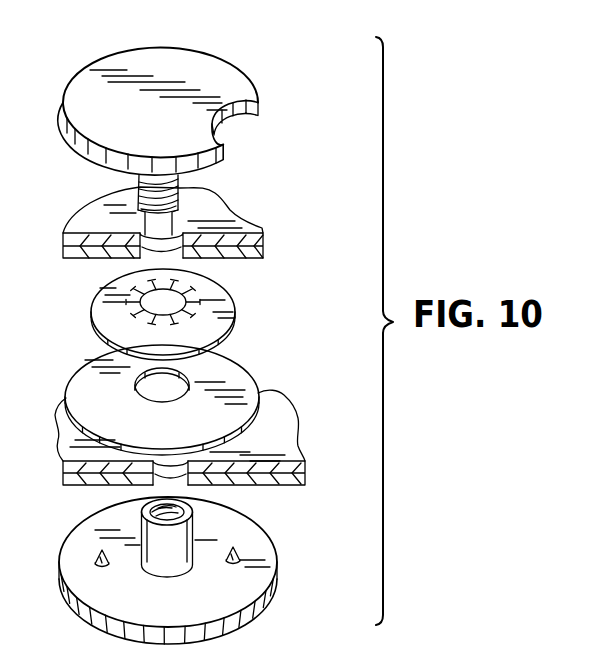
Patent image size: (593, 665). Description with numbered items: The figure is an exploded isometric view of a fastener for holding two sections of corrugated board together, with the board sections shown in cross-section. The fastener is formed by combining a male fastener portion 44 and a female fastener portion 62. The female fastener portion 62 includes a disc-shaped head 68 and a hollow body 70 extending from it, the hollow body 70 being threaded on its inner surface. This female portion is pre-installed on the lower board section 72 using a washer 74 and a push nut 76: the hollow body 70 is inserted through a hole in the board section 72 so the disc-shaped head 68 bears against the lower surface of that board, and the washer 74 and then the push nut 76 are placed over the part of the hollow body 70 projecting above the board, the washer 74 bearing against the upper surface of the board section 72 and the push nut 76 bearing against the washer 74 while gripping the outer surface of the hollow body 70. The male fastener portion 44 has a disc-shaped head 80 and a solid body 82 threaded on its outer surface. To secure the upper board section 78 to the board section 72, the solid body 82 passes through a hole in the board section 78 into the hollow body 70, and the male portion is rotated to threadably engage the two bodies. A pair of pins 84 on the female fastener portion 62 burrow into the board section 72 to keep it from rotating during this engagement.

The disc-shaped head 80 is at (228, 68).
The male fastener portion 44 is at (261, 101).
The solid body 82 is at (180, 183).
The section of corrugated board 78 is at (264, 241).
The push nut 76 is at (228, 298).
The washer 74 is at (233, 366).
The section of corrugated board 72 is at (300, 462).
The female fastener portion 62 is at (258, 513).
The hollow body 70 is at (142, 528).
The pins 84 is at (98, 556).
The disc-shaped head 68 is at (258, 566).